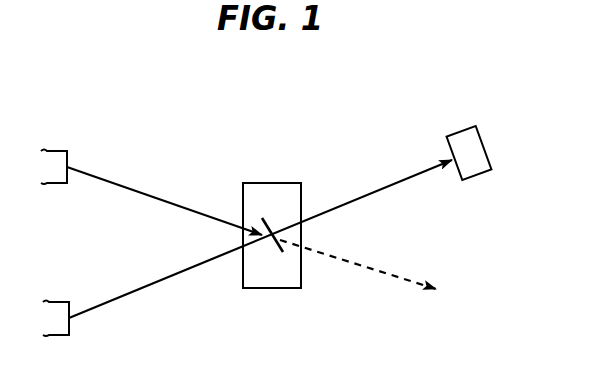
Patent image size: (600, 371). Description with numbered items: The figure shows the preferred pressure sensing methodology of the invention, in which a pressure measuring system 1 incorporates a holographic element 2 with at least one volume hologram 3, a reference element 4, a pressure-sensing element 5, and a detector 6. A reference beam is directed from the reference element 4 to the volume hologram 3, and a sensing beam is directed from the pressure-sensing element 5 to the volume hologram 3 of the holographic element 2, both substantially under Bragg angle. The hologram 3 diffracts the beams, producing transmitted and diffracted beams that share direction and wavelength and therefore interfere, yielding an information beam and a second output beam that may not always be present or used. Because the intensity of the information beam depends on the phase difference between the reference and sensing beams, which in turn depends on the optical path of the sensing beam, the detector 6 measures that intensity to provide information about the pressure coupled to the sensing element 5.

The pressure measuring system 1 is at (306, 122).
The holographic element 2 is at (255, 164).
The volume hologram 3 is at (267, 222).
The reference element 4 is at (53, 150).
The pressure-sensing element 5 is at (52, 302).
The detector 6 is at (460, 137).